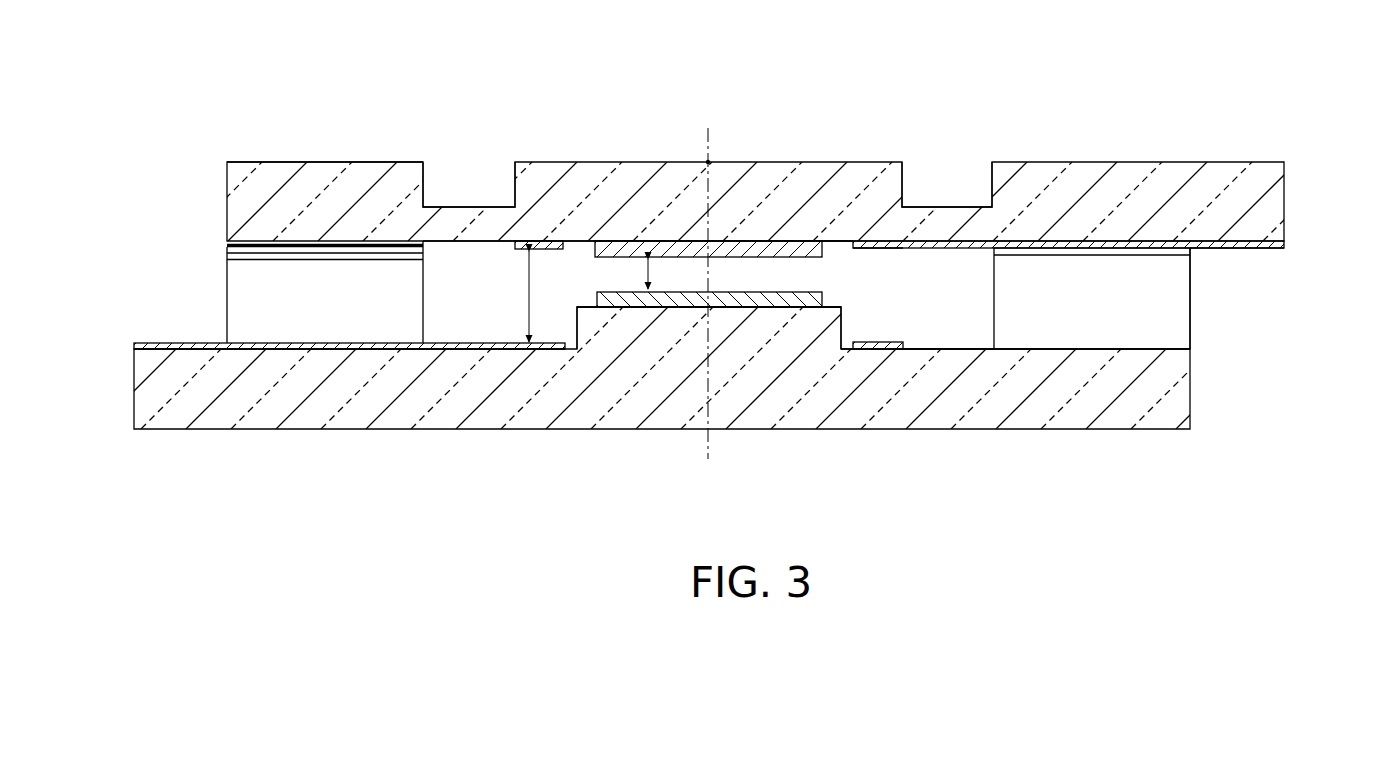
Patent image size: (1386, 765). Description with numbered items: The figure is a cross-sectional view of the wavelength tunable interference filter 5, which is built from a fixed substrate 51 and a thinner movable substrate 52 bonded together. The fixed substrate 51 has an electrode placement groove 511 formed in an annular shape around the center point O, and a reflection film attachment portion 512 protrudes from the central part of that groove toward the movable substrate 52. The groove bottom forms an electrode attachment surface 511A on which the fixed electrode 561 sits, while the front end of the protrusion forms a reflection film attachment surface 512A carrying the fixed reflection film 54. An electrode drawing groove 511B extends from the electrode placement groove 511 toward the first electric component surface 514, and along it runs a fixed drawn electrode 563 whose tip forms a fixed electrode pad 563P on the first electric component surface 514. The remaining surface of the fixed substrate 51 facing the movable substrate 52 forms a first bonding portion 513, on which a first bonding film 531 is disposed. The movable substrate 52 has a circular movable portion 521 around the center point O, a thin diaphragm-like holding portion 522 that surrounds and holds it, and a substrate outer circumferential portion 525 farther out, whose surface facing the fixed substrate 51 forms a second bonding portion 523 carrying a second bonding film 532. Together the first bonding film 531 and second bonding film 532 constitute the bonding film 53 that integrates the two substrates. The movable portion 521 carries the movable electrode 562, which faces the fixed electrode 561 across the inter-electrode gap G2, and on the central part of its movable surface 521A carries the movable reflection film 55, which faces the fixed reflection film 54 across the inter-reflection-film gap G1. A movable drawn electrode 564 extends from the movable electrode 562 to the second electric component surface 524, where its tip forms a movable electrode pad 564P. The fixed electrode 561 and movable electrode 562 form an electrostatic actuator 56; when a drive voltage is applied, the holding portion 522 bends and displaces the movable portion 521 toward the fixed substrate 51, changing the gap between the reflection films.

The wavelength tunable interference filter 5 is at (989, 90).
The fixed substrate 51 is at (1178, 397).
The electrode placement groove 511 is at (993, 322).
The electrode attachment surface 511A is at (925, 345).
The electrode drawing groove 511B is at (1100, 345).
The reflection film attachment portion 512 is at (840, 323).
The reflection film attachment surface 512A is at (847, 292).
The first bonding portion 513 is at (1192, 250).
The first electric component surface 514 is at (160, 350).
The movable substrate 52 is at (1284, 216).
The movable portion 521 is at (598, 163).
The movable surface 521A is at (840, 248).
The holding portion 522 is at (958, 205).
The second bonding portion 523 is at (300, 246).
The second electric component surface 524 is at (1250, 248).
The substrate outer circumferential portion 525 is at (350, 175).
The bonding film 53 is at (273, 255).
The first bonding film 531 is at (225, 256).
The second bonding film 532 is at (225, 251).
The fixed reflection film 54 is at (752, 307).
The movable reflection film 55 is at (753, 250).
The electrostatic actuator 56 is at (914, 298).
The fixed electrode 561 is at (891, 337).
The movable electrode 562 is at (890, 250).
The fixed drawn electrode 563 is at (307, 344).
The fixed electrode pad 563P is at (192, 352).
The movable drawn electrode 564 is at (1100, 249).
The movable electrode pad 564P is at (1287, 245).
The inter-reflection-film gap G1 is at (664, 274).
The inter-electrode gap G2 is at (544, 296).
The center point O is at (697, 151).